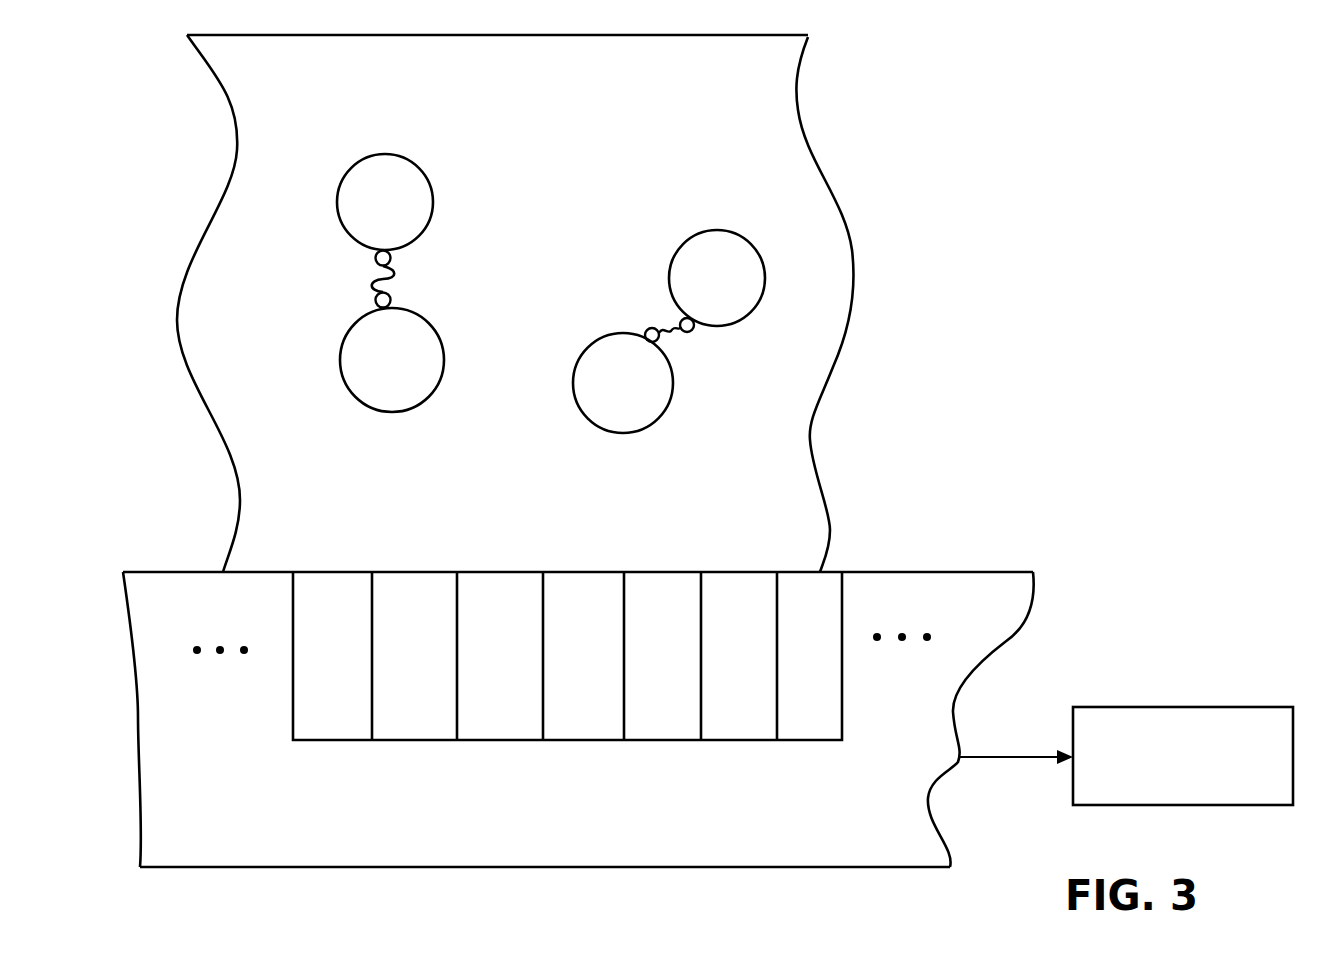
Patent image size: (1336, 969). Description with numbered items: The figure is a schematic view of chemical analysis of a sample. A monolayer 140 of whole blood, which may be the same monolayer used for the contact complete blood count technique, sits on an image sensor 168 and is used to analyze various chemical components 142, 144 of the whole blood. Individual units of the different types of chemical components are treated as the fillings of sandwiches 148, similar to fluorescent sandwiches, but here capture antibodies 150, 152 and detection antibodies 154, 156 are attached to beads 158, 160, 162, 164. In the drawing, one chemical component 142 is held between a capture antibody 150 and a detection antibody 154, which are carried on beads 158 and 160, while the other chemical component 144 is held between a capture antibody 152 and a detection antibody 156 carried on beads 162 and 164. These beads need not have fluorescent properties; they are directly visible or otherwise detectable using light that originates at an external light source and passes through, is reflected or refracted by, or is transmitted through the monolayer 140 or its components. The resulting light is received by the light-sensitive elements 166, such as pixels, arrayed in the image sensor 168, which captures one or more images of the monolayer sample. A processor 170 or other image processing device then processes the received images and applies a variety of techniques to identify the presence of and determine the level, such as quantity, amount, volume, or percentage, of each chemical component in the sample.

The monolayer 140 is at (228, 448).
The chemical component 142 is at (375, 283).
The chemical component 144 is at (672, 340).
The sandwich 148 is at (311, 159).
The capture antibody 150 is at (374, 258).
The capture antibody 152 is at (680, 318).
The detection antibody 154 is at (392, 302).
The detection antibody 156 is at (645, 330).
The bead 158 is at (409, 156).
The bead 160 is at (394, 413).
The bead 162 is at (711, 231).
The bead 164 is at (622, 434).
The light-sensitive element 166 is at (331, 742).
The image sensor 168 is at (1010, 643).
The processor 170 is at (1130, 706).